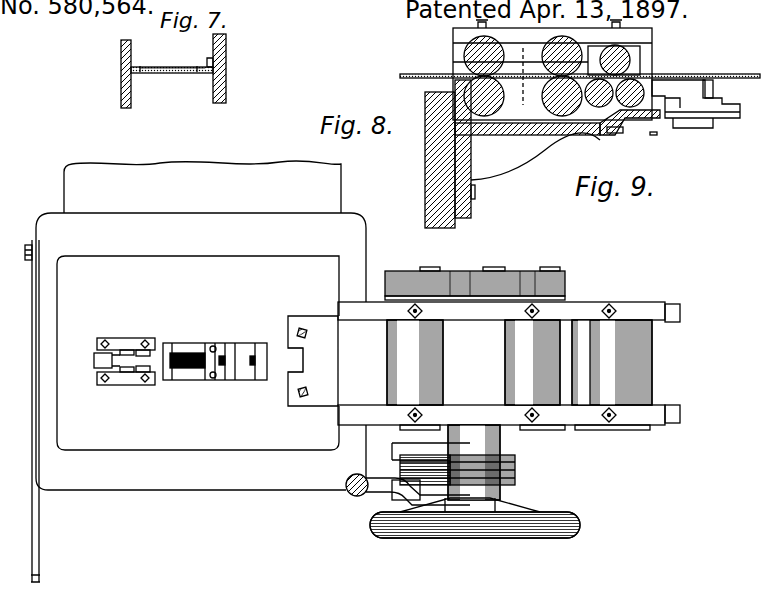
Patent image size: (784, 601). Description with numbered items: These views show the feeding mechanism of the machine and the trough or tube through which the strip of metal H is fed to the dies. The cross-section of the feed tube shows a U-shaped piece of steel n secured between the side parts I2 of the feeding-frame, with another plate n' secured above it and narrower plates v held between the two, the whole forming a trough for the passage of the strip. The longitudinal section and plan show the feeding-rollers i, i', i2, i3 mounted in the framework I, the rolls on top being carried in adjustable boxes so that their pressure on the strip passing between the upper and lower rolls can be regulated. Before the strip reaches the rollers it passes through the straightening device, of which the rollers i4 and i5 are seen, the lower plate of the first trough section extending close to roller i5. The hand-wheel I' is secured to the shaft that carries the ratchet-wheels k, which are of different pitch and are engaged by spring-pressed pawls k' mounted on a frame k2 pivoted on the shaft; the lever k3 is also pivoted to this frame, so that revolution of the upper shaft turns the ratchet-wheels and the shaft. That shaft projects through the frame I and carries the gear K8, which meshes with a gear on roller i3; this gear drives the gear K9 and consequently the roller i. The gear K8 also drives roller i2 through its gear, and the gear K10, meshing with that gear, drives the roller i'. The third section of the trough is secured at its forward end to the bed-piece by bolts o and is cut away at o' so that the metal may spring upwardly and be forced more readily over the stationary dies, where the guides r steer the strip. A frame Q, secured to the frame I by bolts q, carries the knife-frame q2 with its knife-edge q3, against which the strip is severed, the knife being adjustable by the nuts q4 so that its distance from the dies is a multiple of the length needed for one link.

In FIG. 7, the side parts of the feeding-frame I2 is at (170, 71).
In FIG. 7, the U-shaped piece of steel n is at (172, 84).
In FIG. 7, the plate n' is at (172, 53).
In FIG. 7, the narrower plates v is at (197, 66).
In FIG. 8, the strip of metal H is at (720, 76).
In FIG. 8, the feeding-roller i is at (528, 39).
In FIG. 9, the feeding-roller i is at (568, 362).
In FIG. 8, the feeding-roller i' is at (635, 39).
In FIG. 9, the feeding-roller i' is at (401, 362).
In FIG. 8, the feeding-roller i2 is at (500, 90).
In FIG. 8, the feeding-roller i3 is at (552, 108).
In FIG. 8, the straightening roller i4 is at (652, 75).
In FIG. 8, the straightening roller i5 is at (613, 133).
In FIG. 8, the frame Q is at (698, 118).
In FIG. 8, the bolts q is at (652, 135).
In FIG. 8, the knife-frame q2 is at (720, 109).
In FIG. 8, the knife-edge q3 is at (720, 88).
In FIG. 8, the nuts q4 is at (672, 100).
In FIG. 9, the bolts o is at (313, 362).
In FIG. 9, the cut-away o' is at (308, 360).
In FIG. 9, the guides r is at (220, 391).
In FIG. 9, the framework I is at (509, 378).
In FIG. 9, the hand-wheel I' is at (475, 531).
In FIG. 9, the gear K10 is at (428, 271).
In FIG. 9, the gear K8 is at (490, 270).
In FIG. 9, the gear K9 is at (550, 270).
In FIG. 9, the ratchet-wheels k is at (492, 470).
In FIG. 9, the pawls k' is at (410, 470).
In FIG. 9, the frame k2 is at (430, 452).
In FIG. 9, the lever k3 is at (365, 498).